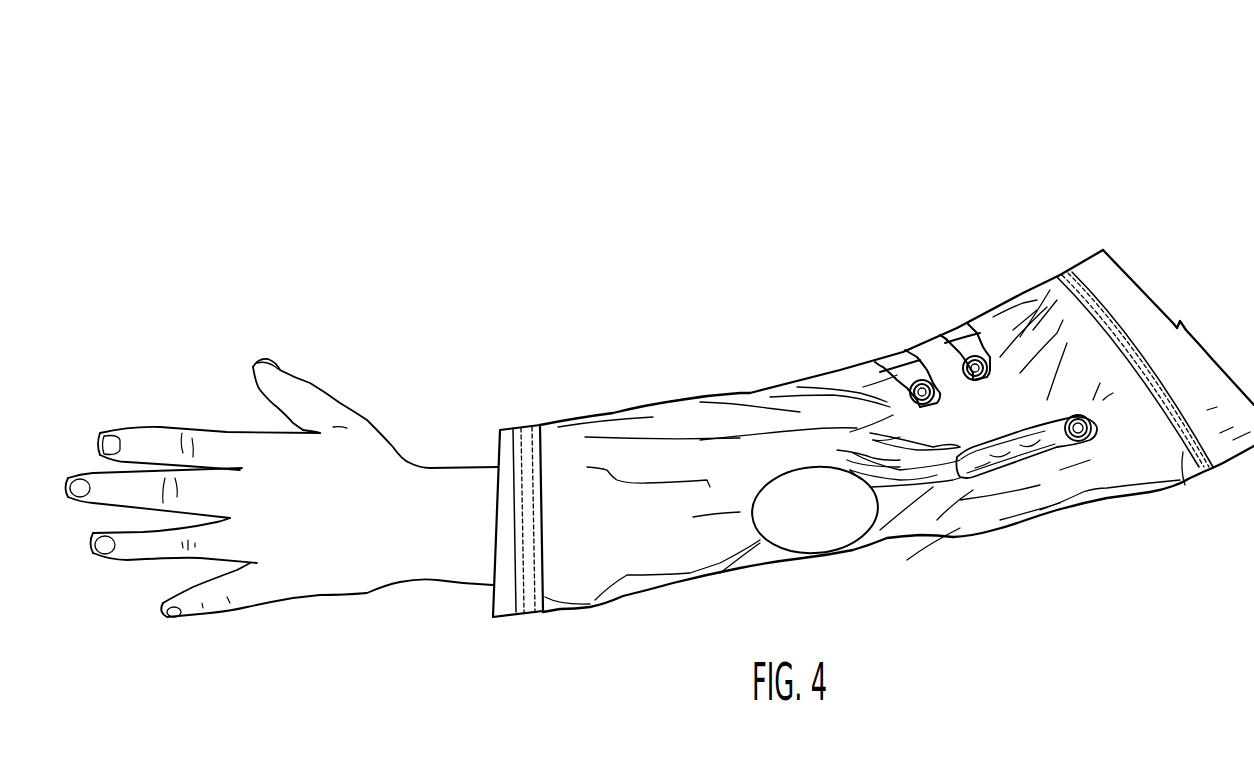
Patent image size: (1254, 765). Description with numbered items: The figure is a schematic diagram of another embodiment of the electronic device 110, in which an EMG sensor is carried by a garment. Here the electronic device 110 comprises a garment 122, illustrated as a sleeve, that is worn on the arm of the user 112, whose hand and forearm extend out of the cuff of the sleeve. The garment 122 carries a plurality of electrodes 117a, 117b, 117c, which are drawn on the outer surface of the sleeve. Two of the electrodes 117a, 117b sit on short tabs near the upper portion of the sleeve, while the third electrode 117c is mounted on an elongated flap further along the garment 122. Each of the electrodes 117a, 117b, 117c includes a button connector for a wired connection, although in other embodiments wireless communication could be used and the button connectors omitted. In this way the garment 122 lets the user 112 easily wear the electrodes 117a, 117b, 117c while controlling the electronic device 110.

The electronic device 110 is at (1190, 135).
The user 112 is at (400, 485).
The garment 122 is at (618, 450).
The electrode 117a is at (907, 376).
The electrode 117b is at (967, 345).
The electrode 117c is at (1088, 452).